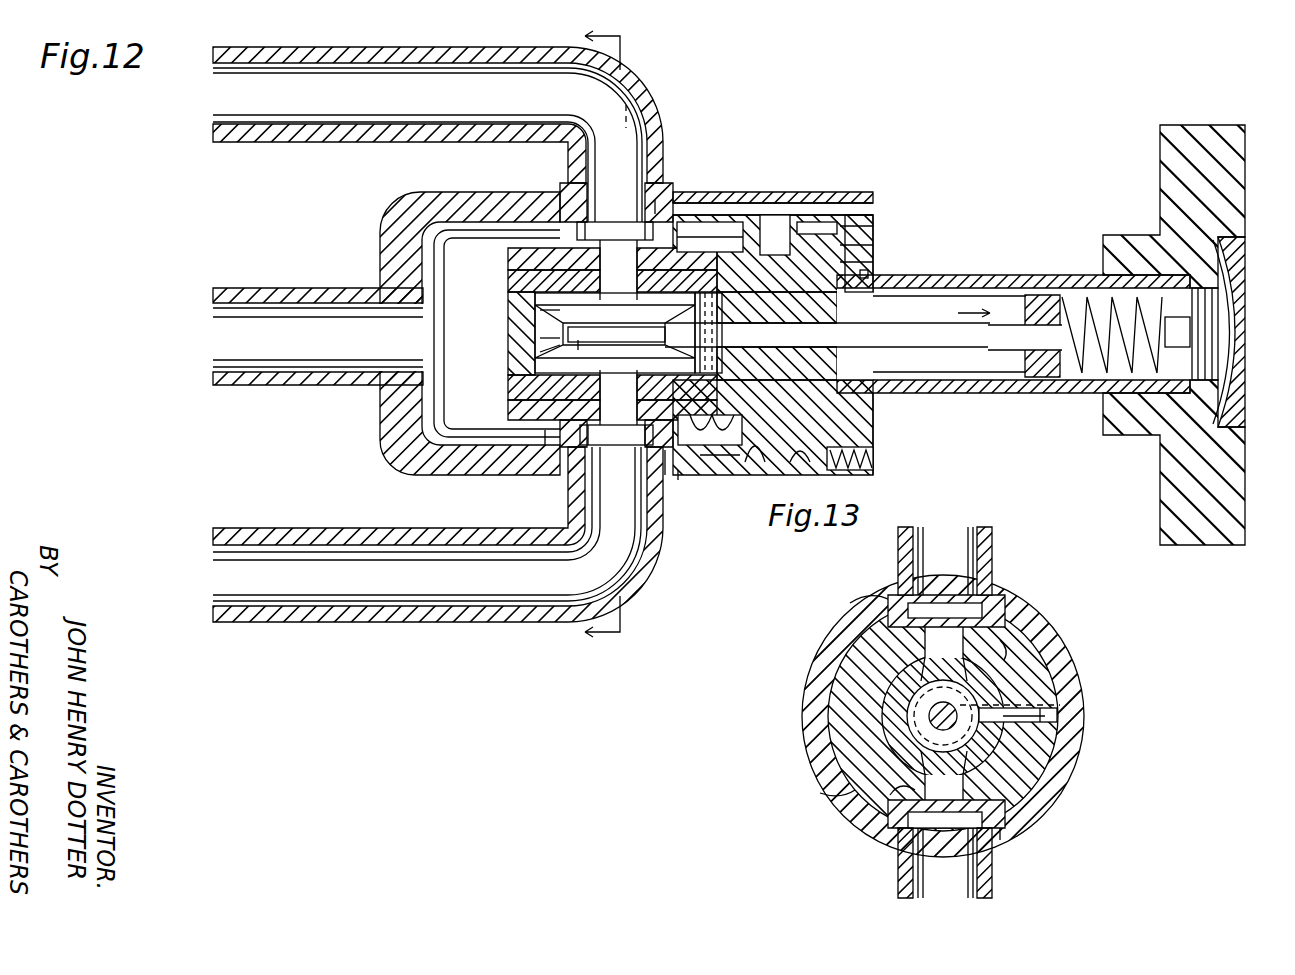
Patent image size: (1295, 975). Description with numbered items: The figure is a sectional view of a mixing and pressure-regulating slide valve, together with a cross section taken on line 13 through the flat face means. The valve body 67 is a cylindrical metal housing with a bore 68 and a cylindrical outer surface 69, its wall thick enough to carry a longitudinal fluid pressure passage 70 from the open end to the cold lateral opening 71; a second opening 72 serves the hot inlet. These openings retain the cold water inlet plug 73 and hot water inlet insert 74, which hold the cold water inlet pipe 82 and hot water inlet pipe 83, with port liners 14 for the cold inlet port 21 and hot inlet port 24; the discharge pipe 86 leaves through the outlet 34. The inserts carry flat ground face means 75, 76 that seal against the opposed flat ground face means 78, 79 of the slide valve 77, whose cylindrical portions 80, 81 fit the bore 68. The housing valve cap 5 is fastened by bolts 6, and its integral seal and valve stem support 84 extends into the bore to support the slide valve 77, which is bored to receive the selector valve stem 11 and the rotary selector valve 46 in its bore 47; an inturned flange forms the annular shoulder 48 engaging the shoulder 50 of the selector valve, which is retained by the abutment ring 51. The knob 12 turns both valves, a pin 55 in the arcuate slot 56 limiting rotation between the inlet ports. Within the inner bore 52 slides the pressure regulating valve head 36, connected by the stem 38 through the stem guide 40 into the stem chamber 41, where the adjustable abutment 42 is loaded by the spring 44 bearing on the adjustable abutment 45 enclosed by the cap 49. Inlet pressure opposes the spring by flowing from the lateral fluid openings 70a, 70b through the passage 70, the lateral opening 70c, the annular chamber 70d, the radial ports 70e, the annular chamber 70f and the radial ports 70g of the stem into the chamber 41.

In FIG. 12, the housing valve cap 5 is at (874, 414).
In FIG. 12, the bolts 6 is at (874, 456).
In FIG. 12, the selector valve stem 11 is at (1005, 286).
In FIG. 12, the knob 12 is at (1220, 128).
In FIG. 12, the section line 13— 13 is at (589, 334).
In FIG. 12, the port liners 14 is at (648, 437).
In FIG. 13, the port liners 14 is at (900, 825).
In FIG. 12, the cold inlet port 21 is at (623, 258).
In FIG. 13, the cold inlet port 21 is at (962, 603).
In FIG. 12, the hot inlet port 24 is at (634, 394).
In FIG. 13, the hot inlet port 24 is at (965, 842).
In FIG. 12, the outlet 34 is at (400, 339).
In FIG. 13, the outlet 34 is at (1060, 712).
In FIG. 12, the pressure regulating valve head 36 is at (522, 355).
In FIG. 13, the pressure regulating valve head 36 is at (985, 745).
In FIG. 12, the stem 38 is at (578, 354).
In FIG. 13, the stem 38 is at (958, 700).
In FIG. 12, the stem guide 40 is at (830, 362).
In FIG. 12, the stem chamber 41 is at (960, 380).
In FIG. 12, the adjustable abutment 42 is at (1045, 380).
In FIG. 12, the spring 44 is at (1100, 378).
In FIG. 12, the adjustable abutment 45 is at (1234, 310).
In FIG. 12, the rotary selector valve 46 is at (555, 385).
In FIG. 12, the bore 47 is at (552, 360).
In FIG. 12, the annular shoulder 48 is at (560, 298).
In FIG. 12, the cap 49 is at (1246, 363).
In FIG. 12, the shoulder 50 is at (800, 462).
In FIG. 12, the abutment ring 51 is at (555, 311).
In FIG. 12, the inner bore 52 is at (543, 338).
In FIG. 13, the pin 55 is at (1010, 730).
In FIG. 13, the arcuate slot 56 is at (1005, 697).
In FIG. 12, the valve body 67 is at (462, 196).
In FIG. 13, the valve body 67 is at (852, 605).
In FIG. 12, the bore 68 is at (422, 237).
In FIG. 13, the bore 68 is at (855, 655).
In FIG. 13, the cylindrical outer surface 69 is at (820, 650).
In FIG. 12, the longitudinal fluid pressure passage 70 is at (736, 207).
In FIG. 12, the lateral fluid opening 70a is at (688, 208).
In FIG. 12, the lateral fluid opening 70b is at (655, 206).
In FIG. 12, the lateral opening 70c is at (834, 222).
In FIG. 12, the annular chamber 70d is at (862, 228).
In FIG. 12, the radial ports 70e is at (852, 248).
In FIG. 12, the annular chamber 70f is at (848, 263).
In FIG. 12, the radial ports 70g is at (868, 274).
In FIG. 12, the lateral opening 71 is at (585, 196).
In FIG. 13, the lateral opening 71 is at (905, 597).
In FIG. 12, the lateral opening 72 is at (665, 480).
In FIG. 13, the lateral opening 72 is at (910, 840).
In FIG. 12, the cold water inlet plug 73 is at (673, 200).
In FIG. 13, the cold water inlet plug 73 is at (893, 597).
In FIG. 12, the hot water inlet insert 74 is at (678, 481).
In FIG. 13, the hot water inlet insert 74 is at (1000, 836).
In FIG. 12, the flat ground face means 75 is at (560, 280).
In FIG. 13, the flat ground face means 75 is at (1000, 641).
In FIG. 12, the flat ground face means 76 is at (700, 456).
In FIG. 13, the flat ground face means 76 is at (890, 796).
In FIG. 12, the slide valve 77 is at (520, 412).
In FIG. 13, the slide valve 77 is at (1030, 675).
In FIG. 12, the flat ground face means 78 is at (575, 255).
In FIG. 13, the flat ground face means 78 is at (995, 606).
In FIG. 12, the flat ground face means 79 is at (755, 462).
In FIG. 13, the flat ground face means 79 is at (985, 805).
In FIG. 13, the cylindrical portion 80 is at (820, 793).
In FIG. 13, the cylindrical portion 81 is at (1030, 790).
In FIG. 12, the cold water inlet pipe 82 is at (291, 136).
In FIG. 12, the hot water inlet pipe 83 is at (324, 528).
In FIG. 12, the seal and valve stem support 84 is at (795, 228).
In FIG. 12, the discharge pipe 86 is at (268, 288).